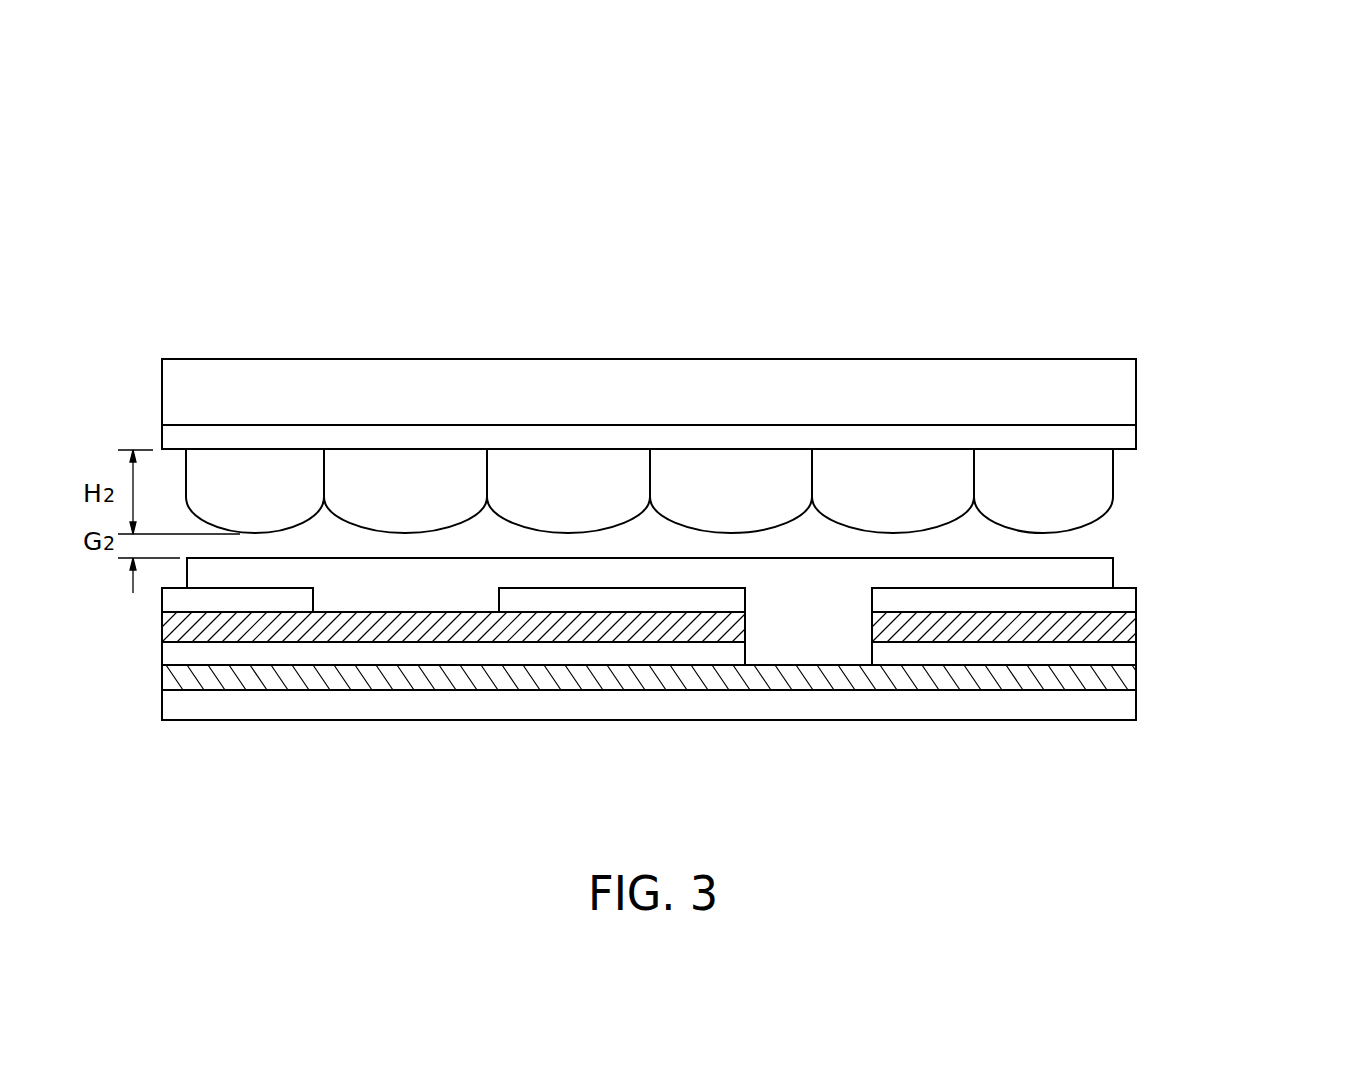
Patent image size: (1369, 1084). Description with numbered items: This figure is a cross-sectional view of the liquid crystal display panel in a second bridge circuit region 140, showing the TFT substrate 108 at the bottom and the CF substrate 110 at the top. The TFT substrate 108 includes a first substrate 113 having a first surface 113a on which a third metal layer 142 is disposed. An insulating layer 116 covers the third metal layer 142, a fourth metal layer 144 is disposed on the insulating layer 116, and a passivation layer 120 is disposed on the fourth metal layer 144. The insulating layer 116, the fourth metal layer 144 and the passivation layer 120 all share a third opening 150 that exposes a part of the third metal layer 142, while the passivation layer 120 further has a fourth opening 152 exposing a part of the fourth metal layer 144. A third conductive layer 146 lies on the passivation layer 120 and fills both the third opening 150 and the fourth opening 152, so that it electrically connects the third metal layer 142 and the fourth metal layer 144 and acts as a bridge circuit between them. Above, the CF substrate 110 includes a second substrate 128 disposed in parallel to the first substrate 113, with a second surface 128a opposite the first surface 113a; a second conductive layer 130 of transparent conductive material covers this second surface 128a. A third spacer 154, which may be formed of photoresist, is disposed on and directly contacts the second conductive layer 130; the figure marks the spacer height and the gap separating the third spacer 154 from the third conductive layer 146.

The second bridge circuit region 140 is at (1199, 187).
The CF substrate 110 is at (1225, 355).
The second substrate 128 is at (1124, 379).
The second surface 128a is at (1122, 427).
The second conductive layer 130 is at (1124, 437).
The third spacer 154 is at (1100, 482).
The TFT substrate 108 is at (1225, 535).
The third conductive layer 146 is at (1108, 567).
The passivation layer 120 is at (1124, 601).
The fourth metal layer 144 is at (1124, 630).
The insulating layer 116 is at (1124, 657).
The third metal layer 142 is at (1133, 678).
The first surface 113a is at (1115, 687).
The first substrate 113 is at (1127, 712).
The fourth opening 152 is at (412, 598).
The third opening 150 is at (795, 598).